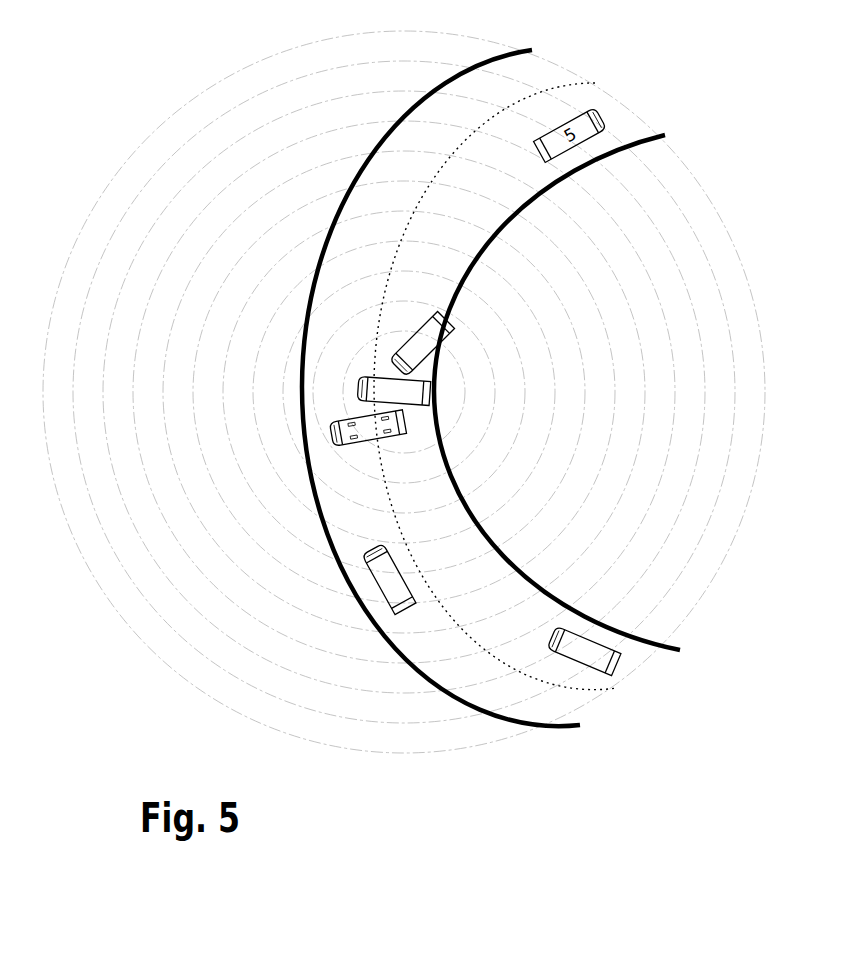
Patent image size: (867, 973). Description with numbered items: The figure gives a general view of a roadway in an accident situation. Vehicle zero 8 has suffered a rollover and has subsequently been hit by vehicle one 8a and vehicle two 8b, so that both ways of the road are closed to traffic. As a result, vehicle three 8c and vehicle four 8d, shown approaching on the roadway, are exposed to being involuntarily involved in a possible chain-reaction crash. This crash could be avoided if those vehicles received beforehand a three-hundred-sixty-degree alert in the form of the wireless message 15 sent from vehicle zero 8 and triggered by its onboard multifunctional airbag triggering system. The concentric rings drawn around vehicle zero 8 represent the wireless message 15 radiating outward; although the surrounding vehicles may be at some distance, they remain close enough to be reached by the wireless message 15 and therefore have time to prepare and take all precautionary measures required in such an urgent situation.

The wireless message 15 is at (157, 365).
The VEHICLE 0 8 is at (357, 390).
The VEHICLE 1 8a is at (452, 318).
The VEHICLE 2 8b is at (336, 445).
The VEHICLE 3 8c is at (605, 657).
The VEHICLE 4 8d is at (395, 600).